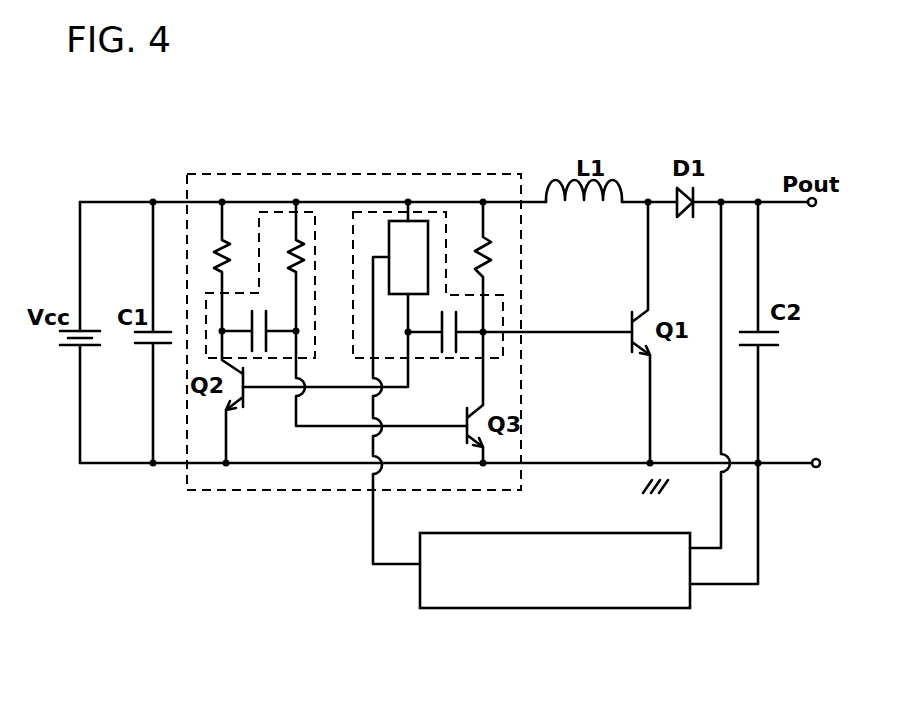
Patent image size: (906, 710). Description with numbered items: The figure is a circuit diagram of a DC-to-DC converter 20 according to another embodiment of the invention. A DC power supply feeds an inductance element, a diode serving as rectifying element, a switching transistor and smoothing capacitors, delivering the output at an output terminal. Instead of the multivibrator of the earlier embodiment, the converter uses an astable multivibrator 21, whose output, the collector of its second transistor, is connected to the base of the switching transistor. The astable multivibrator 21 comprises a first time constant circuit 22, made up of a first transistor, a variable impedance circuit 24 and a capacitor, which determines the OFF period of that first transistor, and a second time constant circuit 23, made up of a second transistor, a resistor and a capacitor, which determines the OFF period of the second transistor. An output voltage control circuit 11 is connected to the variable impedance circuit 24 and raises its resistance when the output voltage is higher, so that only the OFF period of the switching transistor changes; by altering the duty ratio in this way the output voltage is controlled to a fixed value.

The output voltage control circuit 11 is at (608, 608).
The DC-to-DC converter 20 is at (531, 126).
The astable multivibrator 21 is at (203, 174).
The first time constant circuit 22 is at (422, 213).
The second time constant circuit 23 is at (282, 212).
The variable impedance circuit 24 is at (398, 215).